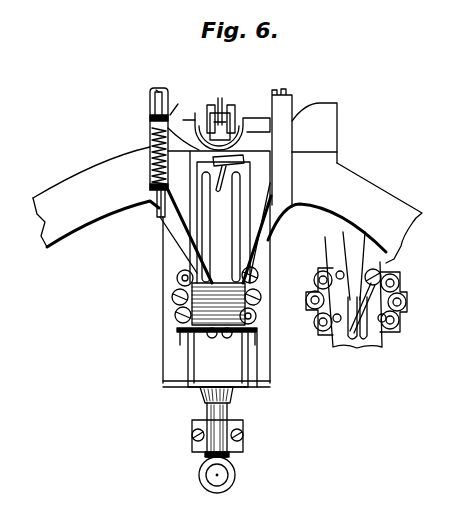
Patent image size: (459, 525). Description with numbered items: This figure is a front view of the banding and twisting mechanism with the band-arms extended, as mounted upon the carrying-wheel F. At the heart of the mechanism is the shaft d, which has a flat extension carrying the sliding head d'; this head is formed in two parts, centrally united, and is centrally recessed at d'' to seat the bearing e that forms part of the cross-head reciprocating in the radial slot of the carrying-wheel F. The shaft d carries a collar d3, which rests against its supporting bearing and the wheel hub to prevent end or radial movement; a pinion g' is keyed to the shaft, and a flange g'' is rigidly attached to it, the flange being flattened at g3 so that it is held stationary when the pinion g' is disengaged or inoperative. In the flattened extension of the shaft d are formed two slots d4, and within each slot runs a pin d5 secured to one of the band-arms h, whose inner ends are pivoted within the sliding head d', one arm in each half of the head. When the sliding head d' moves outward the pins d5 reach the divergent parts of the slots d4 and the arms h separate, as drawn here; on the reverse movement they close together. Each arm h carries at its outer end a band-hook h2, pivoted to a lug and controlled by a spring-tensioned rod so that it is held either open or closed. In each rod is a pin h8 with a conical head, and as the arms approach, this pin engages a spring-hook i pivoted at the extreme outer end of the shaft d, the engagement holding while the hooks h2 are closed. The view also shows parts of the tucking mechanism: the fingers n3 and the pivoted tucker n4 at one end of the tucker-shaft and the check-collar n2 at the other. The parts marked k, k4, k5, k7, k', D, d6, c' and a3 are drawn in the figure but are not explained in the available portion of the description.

The carrying-wheel F is at (227, 183).
The spring post k is at (221, 152).
The band-hook h2 is at (159, 92).
The pin h8 is at (181, 100).
The spring k7 is at (150, 160).
The collar k5 is at (150, 186).
The stem k4 is at (157, 211).
The bracket D is at (186, 121).
The fingers n3 is at (209, 108).
The tucker n4 is at (220, 110).
The check-collar n2 is at (233, 108).
The flattened portion of flange g3 is at (216, 269).
The slots d4 is at (210, 227).
The pin d5 is at (239, 227).
The spring-hook i is at (234, 160).
The band-arm h is at (223, 233).
The collar d3 is at (193, 257).
The pivot d6 is at (224, 261).
The bearing e is at (216, 306).
The roller k' is at (204, 345).
The shaft d is at (219, 359).
The flange g'' is at (265, 385).
The pinion g' is at (229, 398).
The clamp c' is at (228, 430).
The wheel a3 is at (235, 461).
The sliding head d' is at (362, 290).
The recess d'' is at (412, 302).